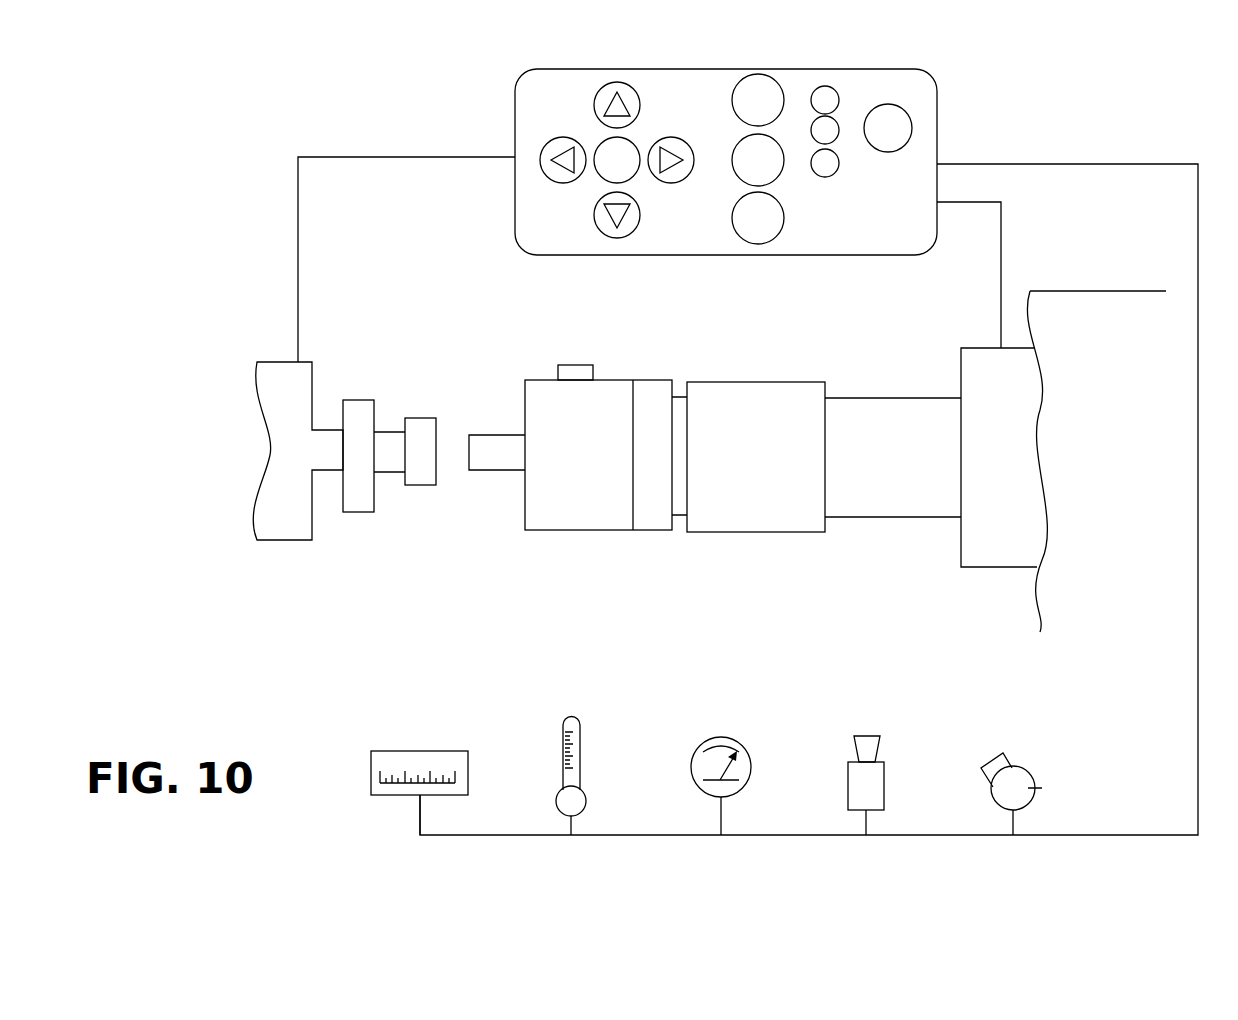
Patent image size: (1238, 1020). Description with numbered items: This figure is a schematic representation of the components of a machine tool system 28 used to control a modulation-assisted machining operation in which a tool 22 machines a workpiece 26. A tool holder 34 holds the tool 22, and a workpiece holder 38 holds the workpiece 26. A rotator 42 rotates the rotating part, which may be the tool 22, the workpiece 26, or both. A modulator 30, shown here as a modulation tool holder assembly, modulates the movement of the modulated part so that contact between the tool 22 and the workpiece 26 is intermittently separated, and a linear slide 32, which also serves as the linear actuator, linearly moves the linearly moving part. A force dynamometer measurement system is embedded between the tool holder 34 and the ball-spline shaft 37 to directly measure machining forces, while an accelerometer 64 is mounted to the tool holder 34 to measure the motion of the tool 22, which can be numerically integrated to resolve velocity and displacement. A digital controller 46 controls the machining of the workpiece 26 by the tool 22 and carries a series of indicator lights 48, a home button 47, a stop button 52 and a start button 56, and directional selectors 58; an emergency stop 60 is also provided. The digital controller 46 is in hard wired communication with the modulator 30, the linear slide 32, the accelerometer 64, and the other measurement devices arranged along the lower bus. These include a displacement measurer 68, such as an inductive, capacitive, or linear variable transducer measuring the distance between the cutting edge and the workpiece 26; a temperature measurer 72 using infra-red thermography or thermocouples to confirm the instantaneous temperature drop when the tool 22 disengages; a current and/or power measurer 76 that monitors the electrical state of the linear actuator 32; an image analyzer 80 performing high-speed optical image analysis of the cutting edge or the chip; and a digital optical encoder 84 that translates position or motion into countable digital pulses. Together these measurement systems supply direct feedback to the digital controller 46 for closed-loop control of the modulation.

The tool 22 is at (490, 442).
The workpiece 26 is at (421, 480).
The machine tool system 28 is at (322, 608).
The modulator 30 is at (800, 388).
The linear slide 32 is at (890, 500).
The tool holder 34 is at (563, 542).
The ball-spline shaft 37 is at (680, 518).
The workpiece holder 38 is at (376, 410).
The rotator 42 is at (323, 445).
The digital controller 46 is at (942, 71).
The home button 47 is at (756, 74).
The indicator lights 48 is at (858, 100).
The stop button 52 is at (740, 140).
The start button 56 is at (757, 245).
The directional selectors 58 is at (578, 124).
The emergency stop 60 is at (905, 128).
The accelerometer 64 is at (575, 370).
The displacement measurer 68 is at (420, 751).
The temperature measurer 72 is at (580, 740).
The current and/or power measurer 76 is at (721, 737).
The image analyzer 80 is at (877, 762).
The digital optical encoder 84 is at (1035, 790).